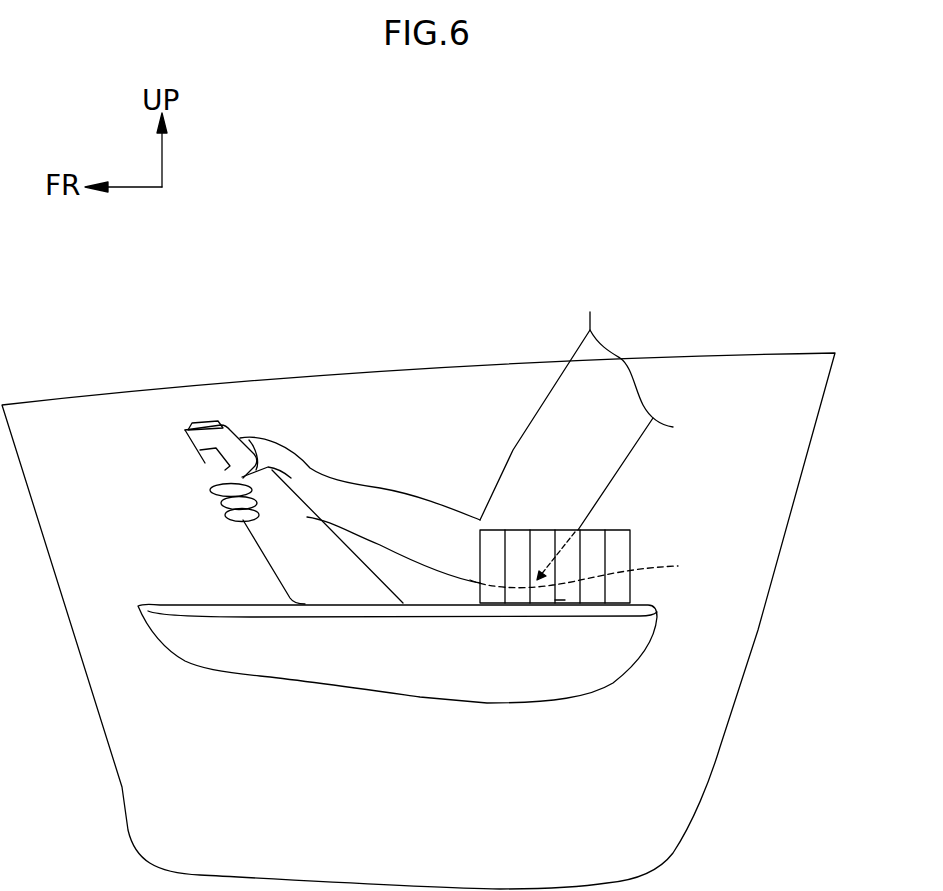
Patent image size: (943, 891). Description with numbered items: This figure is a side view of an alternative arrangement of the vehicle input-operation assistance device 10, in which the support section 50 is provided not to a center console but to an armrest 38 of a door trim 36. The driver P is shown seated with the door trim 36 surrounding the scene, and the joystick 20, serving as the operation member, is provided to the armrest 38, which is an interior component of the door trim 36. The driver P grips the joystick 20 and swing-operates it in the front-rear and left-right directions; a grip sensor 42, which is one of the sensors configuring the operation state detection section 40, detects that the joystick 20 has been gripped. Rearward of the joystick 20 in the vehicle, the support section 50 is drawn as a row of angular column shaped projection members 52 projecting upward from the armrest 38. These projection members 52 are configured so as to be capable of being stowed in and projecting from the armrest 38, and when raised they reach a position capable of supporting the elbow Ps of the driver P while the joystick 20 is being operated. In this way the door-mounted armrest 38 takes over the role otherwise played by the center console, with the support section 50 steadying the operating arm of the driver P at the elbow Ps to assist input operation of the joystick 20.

The vehicle input-operation assistance device 10 is at (620, 529).
The joystick 20 is at (177, 407).
The door trim 36 is at (728, 625).
The armrest 38 is at (427, 676).
The operation state detection section 40 is at (160, 466).
The grip sensor 42 is at (210, 458).
The support section 50 is at (632, 530).
The projection member 52 is at (563, 600).
The driver P is at (584, 339).
The elbow Ps is at (589, 560).